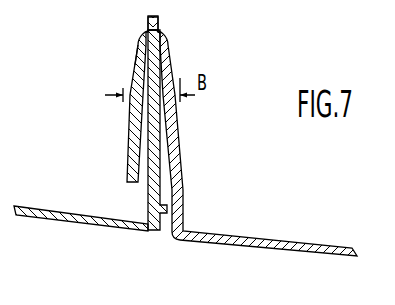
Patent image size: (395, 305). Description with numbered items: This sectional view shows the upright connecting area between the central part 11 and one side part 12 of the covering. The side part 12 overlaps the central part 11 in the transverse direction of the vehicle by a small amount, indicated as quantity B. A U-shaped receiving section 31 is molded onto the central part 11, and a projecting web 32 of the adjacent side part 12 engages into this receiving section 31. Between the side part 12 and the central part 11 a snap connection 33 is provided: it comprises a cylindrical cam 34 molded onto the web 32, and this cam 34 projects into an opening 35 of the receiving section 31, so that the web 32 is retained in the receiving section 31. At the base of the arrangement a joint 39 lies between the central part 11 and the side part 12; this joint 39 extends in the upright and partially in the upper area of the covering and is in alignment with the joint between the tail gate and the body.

The central part 11 is at (252, 243).
The side part 12 is at (44, 209).
The U-shaped receiving section 31 is at (128, 157).
The projecting web 32 is at (158, 146).
The snap connection 33 is at (150, 53).
The cylindrical cam 34 is at (150, 52).
The opening 35 is at (136, 68).
The joint 39 is at (169, 240).